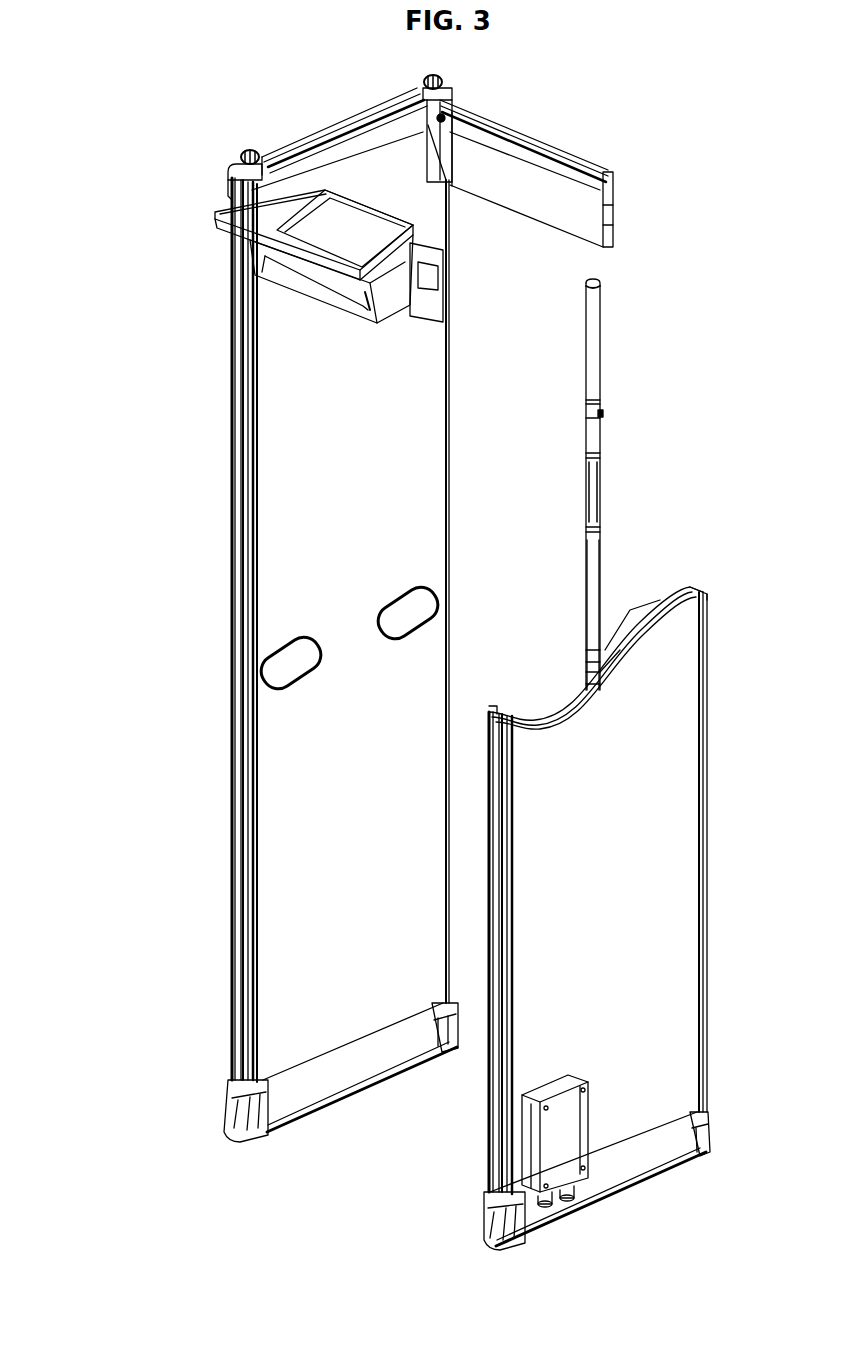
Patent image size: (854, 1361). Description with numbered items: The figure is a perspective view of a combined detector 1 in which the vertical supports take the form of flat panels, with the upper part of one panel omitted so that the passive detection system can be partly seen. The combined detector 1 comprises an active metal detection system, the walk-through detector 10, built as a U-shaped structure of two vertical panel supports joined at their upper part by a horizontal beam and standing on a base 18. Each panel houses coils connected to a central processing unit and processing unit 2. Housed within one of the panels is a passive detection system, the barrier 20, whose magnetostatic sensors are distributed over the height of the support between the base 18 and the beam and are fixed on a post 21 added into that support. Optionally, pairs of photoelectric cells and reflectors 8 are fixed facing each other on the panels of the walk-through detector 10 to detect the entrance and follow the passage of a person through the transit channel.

The combined detector 1 is at (95, 240).
The walk-through detector 10 is at (325, 96).
The photoelectric cells and reflectors 8 is at (292, 665).
The central processing unit and processing unit 2 is at (598, 366).
The barrier 20 is at (616, 485).
The post 21 is at (598, 572).
The base 18 is at (638, 1164).